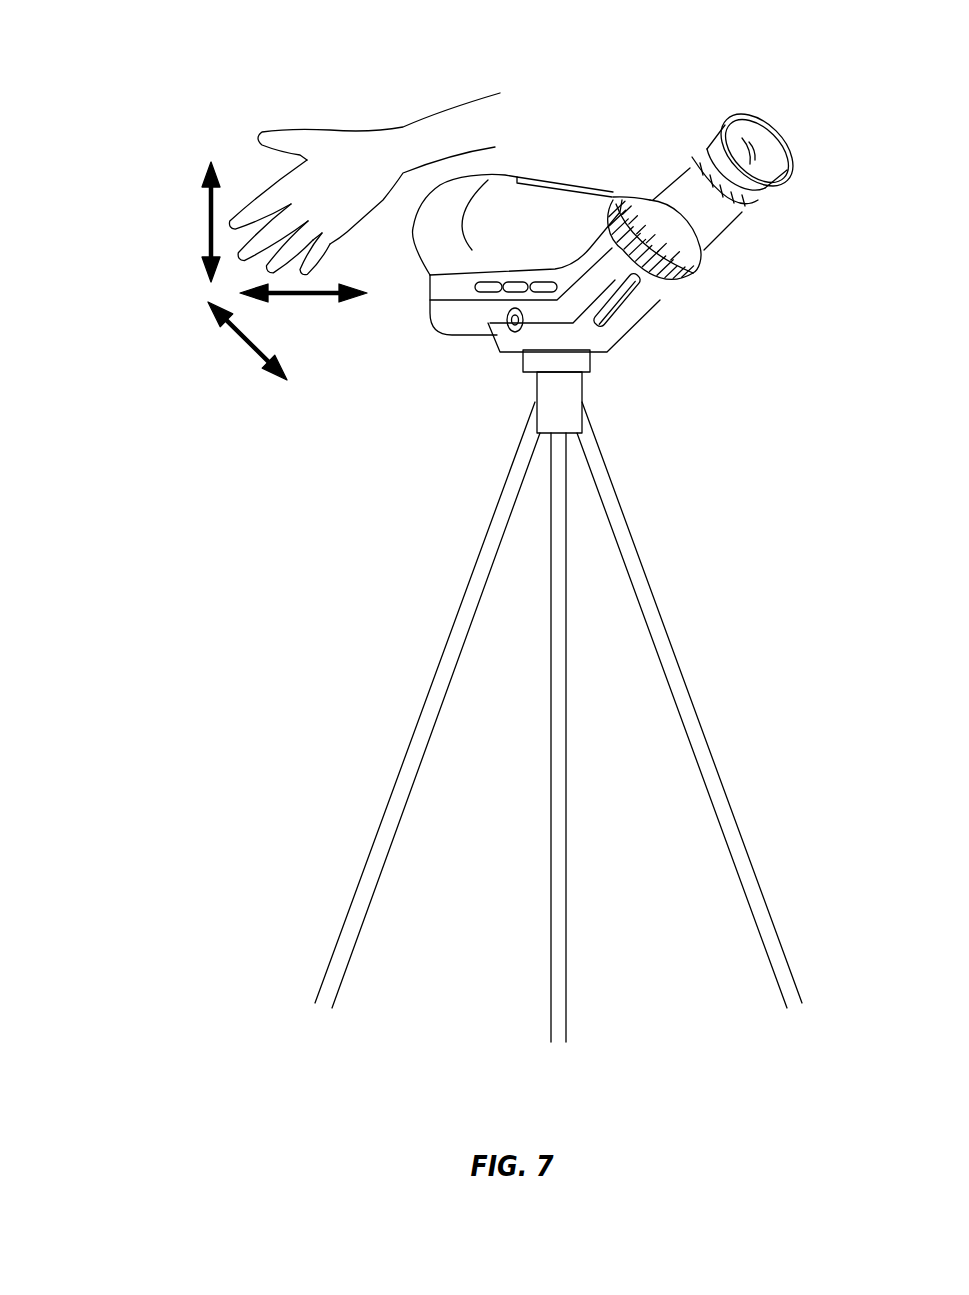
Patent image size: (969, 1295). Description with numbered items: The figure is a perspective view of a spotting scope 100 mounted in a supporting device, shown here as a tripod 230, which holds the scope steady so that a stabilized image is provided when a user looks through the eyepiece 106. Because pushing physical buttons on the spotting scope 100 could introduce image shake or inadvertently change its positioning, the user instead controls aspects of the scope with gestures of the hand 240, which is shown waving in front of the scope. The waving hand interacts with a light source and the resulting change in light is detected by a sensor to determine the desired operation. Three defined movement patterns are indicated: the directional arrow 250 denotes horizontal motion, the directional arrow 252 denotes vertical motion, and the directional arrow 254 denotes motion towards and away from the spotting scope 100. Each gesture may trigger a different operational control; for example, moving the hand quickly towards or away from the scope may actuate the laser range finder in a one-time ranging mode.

The spotting scope 100 is at (650, 128).
The eyepiece 106 is at (775, 182).
The tripod 230 is at (583, 395).
The hand 240 is at (328, 128).
The directional arrow 250 is at (318, 295).
The directional arrow 252 is at (205, 222).
The directional arrow 254 is at (245, 345).